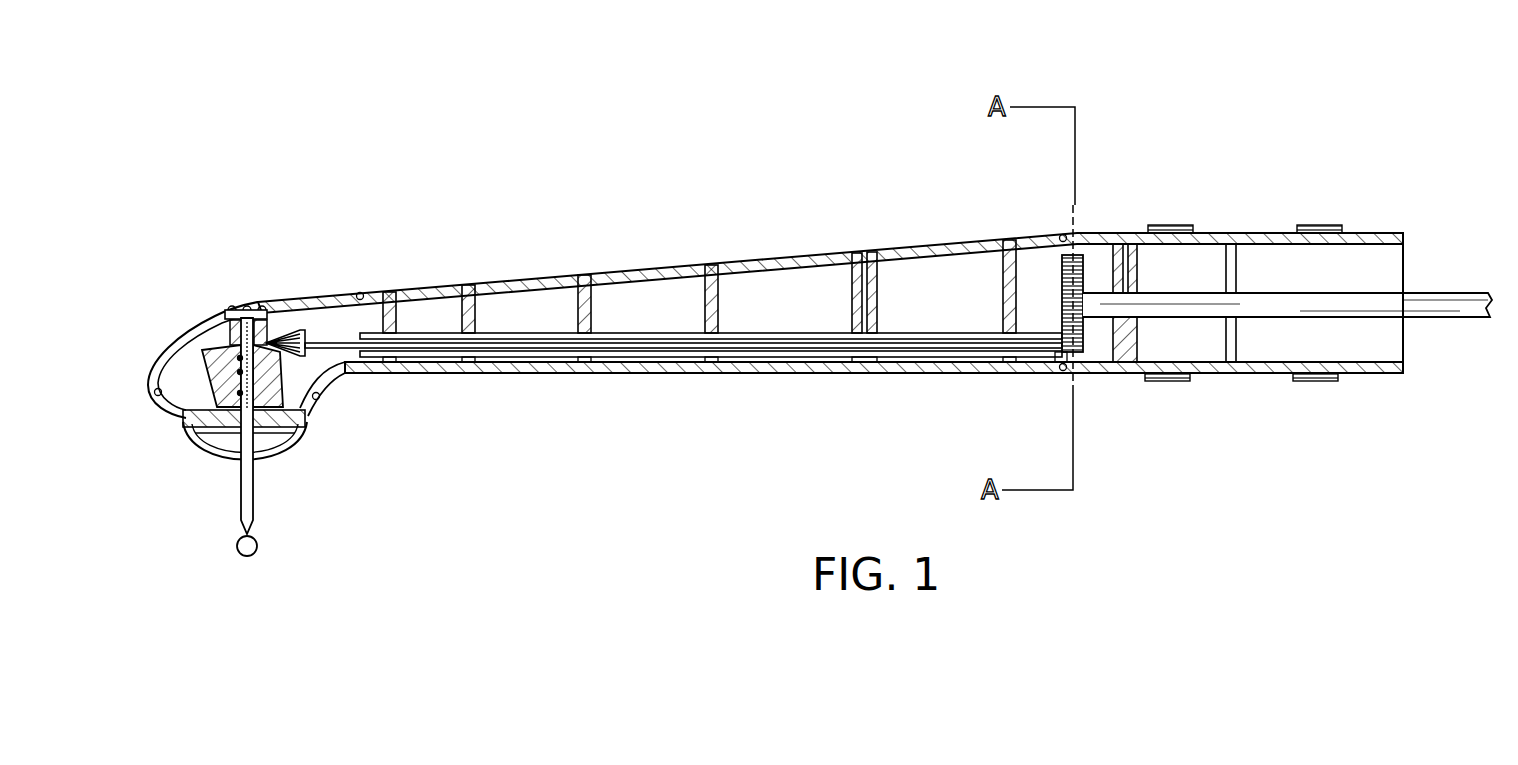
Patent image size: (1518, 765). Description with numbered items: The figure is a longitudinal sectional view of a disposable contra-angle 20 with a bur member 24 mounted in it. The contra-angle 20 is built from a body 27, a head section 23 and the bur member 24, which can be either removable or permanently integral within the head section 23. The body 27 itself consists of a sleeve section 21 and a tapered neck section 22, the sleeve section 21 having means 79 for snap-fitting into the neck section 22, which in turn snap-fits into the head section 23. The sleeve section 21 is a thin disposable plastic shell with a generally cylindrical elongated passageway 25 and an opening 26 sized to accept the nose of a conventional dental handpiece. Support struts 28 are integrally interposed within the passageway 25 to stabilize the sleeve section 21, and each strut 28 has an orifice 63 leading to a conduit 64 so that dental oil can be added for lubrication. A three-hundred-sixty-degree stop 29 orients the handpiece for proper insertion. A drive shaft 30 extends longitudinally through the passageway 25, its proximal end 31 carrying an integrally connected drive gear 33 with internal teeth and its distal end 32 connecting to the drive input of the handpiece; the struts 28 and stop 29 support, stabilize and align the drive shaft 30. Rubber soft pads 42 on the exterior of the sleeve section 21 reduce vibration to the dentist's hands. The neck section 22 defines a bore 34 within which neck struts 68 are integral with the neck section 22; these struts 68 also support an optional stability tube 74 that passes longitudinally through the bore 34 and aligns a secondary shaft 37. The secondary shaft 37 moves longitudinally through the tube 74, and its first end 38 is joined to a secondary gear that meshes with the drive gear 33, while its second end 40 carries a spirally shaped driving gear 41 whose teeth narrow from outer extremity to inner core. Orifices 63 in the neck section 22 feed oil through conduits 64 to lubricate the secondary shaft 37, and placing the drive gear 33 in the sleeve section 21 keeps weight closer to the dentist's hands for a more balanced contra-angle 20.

The disposable contra-angle 20 is at (351, 173).
The sleeve section 21 is at (1232, 380).
The tapered neck section 22 is at (791, 378).
The head section 23 is at (349, 377).
The bur member 24 is at (262, 492).
The elongated passageway 25 is at (1275, 355).
The opening 26 is at (1405, 346).
The body 27 is at (722, 262).
The support struts 28 is at (1137, 343).
The 360° stop 29 is at (1222, 269).
The drive shaft 30 is at (1362, 300).
The proximal end 31 is at (1087, 290).
The distal end 32 is at (1460, 292).
The drive gear 33 is at (1062, 312).
The bore 34 is at (922, 323).
The secondary shaft 37 is at (953, 342).
The first end 38 is at (1053, 356).
The second end 40 is at (318, 338).
The spirally shaped driving gear 41 is at (283, 311).
The rubber soft pads 42 is at (1328, 225).
The orifice 63 is at (1130, 243).
The conduit 64 is at (880, 284).
The neck struts 68 is at (479, 320).
The stability tube 74 is at (655, 357).
The means for snap-fitting 79 is at (361, 294).